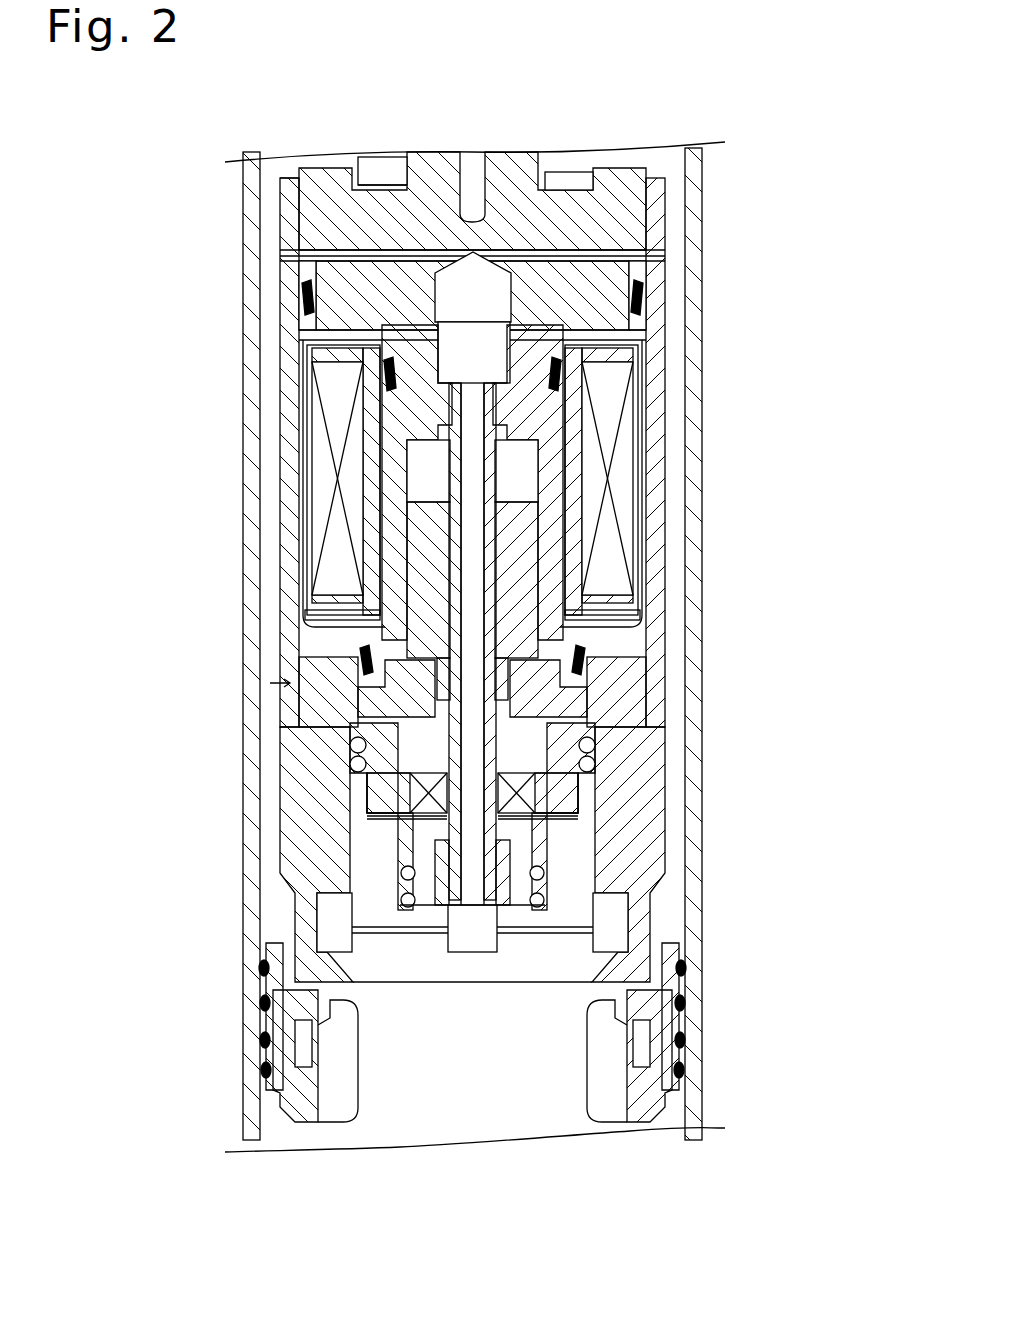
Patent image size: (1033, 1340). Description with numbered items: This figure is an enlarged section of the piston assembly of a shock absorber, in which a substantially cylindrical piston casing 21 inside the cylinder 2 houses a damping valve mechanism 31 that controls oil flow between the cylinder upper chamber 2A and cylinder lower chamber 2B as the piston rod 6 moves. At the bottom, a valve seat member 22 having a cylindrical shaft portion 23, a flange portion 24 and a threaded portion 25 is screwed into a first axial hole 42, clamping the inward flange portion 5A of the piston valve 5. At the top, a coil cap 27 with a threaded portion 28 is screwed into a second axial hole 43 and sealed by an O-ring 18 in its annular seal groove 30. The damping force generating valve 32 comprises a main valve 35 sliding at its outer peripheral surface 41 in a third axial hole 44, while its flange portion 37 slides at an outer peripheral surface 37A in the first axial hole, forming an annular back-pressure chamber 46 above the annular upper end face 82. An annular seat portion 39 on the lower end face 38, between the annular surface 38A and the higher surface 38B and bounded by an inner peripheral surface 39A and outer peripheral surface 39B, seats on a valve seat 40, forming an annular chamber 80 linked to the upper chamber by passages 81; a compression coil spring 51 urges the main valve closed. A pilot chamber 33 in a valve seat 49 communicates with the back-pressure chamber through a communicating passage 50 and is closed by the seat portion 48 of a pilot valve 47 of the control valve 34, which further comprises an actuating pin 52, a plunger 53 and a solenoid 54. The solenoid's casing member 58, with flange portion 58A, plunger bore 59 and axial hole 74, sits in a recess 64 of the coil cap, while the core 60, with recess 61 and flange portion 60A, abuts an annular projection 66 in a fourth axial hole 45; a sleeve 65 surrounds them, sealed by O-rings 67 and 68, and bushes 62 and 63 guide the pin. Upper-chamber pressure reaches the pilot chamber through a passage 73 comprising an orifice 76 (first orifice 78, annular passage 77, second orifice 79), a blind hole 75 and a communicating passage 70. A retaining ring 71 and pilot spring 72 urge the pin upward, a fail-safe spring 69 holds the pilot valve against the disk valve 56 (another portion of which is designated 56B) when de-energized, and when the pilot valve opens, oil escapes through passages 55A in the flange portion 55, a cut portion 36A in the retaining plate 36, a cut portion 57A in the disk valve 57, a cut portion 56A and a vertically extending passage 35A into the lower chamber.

The cylinder 2 is at (695, 155).
The cylinder upper chamber 2A is at (615, 168).
The cylinder lower chamber 2B is at (413, 1125).
The piston valve 5 is at (662, 1040).
The inward flange portion 5A is at (676, 1095).
The piston rod 6 is at (378, 160).
The O-ring 18 is at (610, 295).
The piston casing 21 is at (288, 420).
The valve seat member 22 is at (285, 1125).
The cylindrical shaft portion 23 is at (318, 1122).
The flange portion 24 is at (273, 1100).
The threaded portion 25 is at (640, 1122).
The coil cap 27 is at (650, 170).
The threaded portion 28 is at (295, 175).
The annular seal groove 30 is at (625, 265).
The damping valve mechanism 31 is at (285, 660).
The damping force generating valve 32 is at (300, 930).
The pilot chamber 33 is at (520, 985).
The control valve 34 is at (300, 850).
The main valve 35 is at (600, 900).
The vertically extending passage 35A is at (578, 990).
The retaining plate 36 is at (590, 785).
The cut portion 36A is at (355, 775).
The flange portion 37 is at (580, 935).
The outer peripheral surface 37A is at (262, 968).
The lower end face 38 is at (477, 985).
The annular surface 38A is at (262, 1002).
The surface 38B is at (552, 985).
The annular seat portion 39 is at (340, 1122).
The inner peripheral surface 39A is at (348, 1122).
The outer peripheral surface 39B is at (258, 1038).
The valve seat 40 is at (595, 985).
The outer peripheral surface 41 is at (320, 880).
The first axial hole 42 is at (620, 925).
The second axial hole 43 is at (655, 355).
The third axial hole 44 is at (400, 895).
The fourth axial hole 45 is at (600, 705).
The annular back-pressure chamber 46 is at (550, 905).
The pilot valve 47 is at (463, 982).
The annular seat portion 48 is at (470, 985).
The valve seat 49 is at (535, 1000).
The communicating passage 50 is at (370, 1027).
The compression coil spring 51 is at (355, 762).
The actuating pin 52 is at (335, 490).
The plunger 53 is at (378, 560).
The solenoid 54 is at (308, 452).
The flange portion 55 is at (545, 895).
The passages 55A is at (545, 880).
The disk valve 56 is at (405, 830).
The cut portion 56A is at (510, 850).
The disc portion 56B is at (540, 845).
The disk valve 57 is at (395, 800).
The cut portion 57A is at (580, 800).
The casing member 58 is at (540, 460).
The flange portion 58A is at (650, 335).
The plunger bore 59 is at (520, 480).
The core 60 is at (640, 665).
The flange portion 60A is at (605, 690).
The recess 61 is at (655, 565).
The bush 62 is at (640, 430).
The bush 63 is at (600, 650).
The recess 64 is at (640, 255).
The sleeve 65 is at (395, 520).
The annular projection 66 is at (365, 695).
The O-ring 67 is at (305, 355).
The O-ring 68 is at (362, 652).
The fail-safe spring 69 is at (443, 982).
The communicating passage 70 is at (482, 955).
The retaining ring 71 is at (590, 745).
The pilot spring 72 is at (355, 742).
The passage 73 is at (476, 252).
The axial hole 74 is at (303, 335).
The blind hole 75 is at (675, 200).
The orifice 76 is at (395, 170).
The annular passage 77 is at (600, 336).
The first orifice 78 is at (303, 287).
The second orifice 79 is at (303, 270).
The annular chamber 80 is at (688, 990).
The passages 81 is at (672, 1010).
The annular upper end face 82 is at (325, 945).